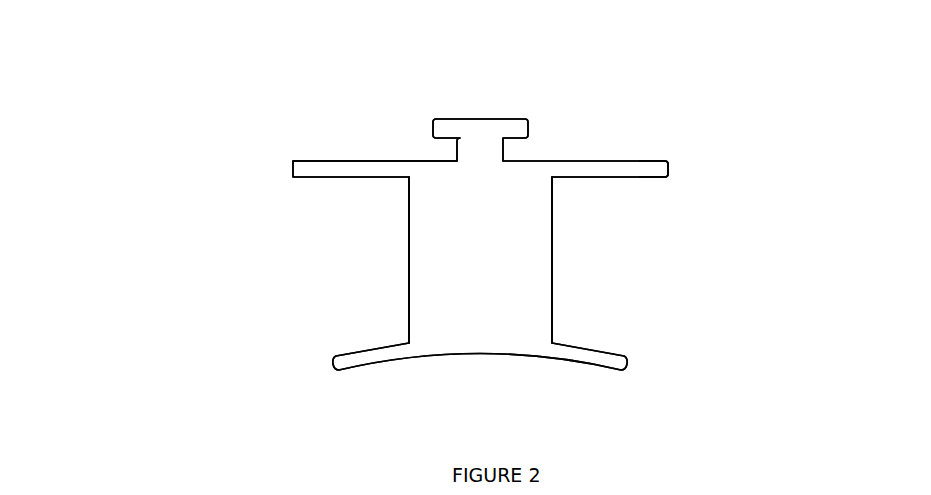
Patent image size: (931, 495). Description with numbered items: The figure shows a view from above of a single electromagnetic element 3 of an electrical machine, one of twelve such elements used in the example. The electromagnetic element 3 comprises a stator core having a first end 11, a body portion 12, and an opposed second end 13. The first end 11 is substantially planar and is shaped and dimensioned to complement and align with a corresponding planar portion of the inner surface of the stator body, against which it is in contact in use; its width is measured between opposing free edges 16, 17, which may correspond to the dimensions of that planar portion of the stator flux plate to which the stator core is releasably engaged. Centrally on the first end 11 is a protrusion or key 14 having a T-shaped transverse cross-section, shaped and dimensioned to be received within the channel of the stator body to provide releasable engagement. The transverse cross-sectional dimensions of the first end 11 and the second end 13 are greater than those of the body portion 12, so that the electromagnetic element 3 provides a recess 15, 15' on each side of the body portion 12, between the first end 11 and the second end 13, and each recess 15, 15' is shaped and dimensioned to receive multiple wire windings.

The electromagnetic element 3 is at (200, 145).
The first end 11 is at (608, 167).
The body portion 12 is at (440, 262).
The second end 13 is at (537, 353).
The protrusion or key 14 is at (478, 130).
The recess 15 is at (635, 260).
The recess 15' is at (277, 260).
The free edge 16 is at (291, 163).
The free edge 17 is at (668, 167).